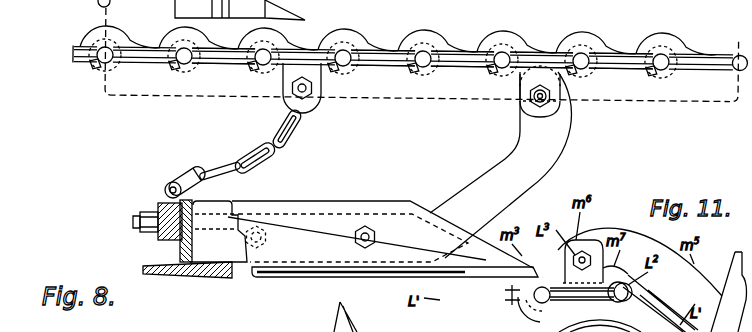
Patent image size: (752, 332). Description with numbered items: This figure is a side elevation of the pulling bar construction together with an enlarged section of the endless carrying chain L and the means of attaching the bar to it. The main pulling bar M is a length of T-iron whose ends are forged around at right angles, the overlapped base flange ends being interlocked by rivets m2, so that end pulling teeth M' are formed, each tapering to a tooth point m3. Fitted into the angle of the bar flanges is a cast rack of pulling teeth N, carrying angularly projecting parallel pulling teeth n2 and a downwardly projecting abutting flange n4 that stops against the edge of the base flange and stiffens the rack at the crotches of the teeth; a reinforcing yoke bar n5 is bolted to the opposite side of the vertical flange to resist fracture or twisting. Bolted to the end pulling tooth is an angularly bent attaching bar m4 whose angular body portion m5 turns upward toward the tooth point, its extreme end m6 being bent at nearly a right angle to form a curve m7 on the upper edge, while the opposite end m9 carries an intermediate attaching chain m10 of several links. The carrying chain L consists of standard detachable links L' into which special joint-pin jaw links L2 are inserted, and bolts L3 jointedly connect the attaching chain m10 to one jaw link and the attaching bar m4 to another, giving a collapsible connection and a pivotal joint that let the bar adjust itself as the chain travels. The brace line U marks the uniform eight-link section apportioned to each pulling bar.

The endless chain L is at (410, 39).
The standard detachable link L' is at (422, 35).
The detachable joint-pin jaw link L2 is at (528, 52).
The bolt L3 is at (293, 92).
The brace line U is at (419, 112).
The rivets m2 is at (212, 280).
The tooth point m3 is at (300, 198).
The angularly bent attaching bar m4 is at (348, 212).
The angular body portion m5 is at (477, 173).
The extreme end m6 is at (516, 88).
The curve m7 is at (518, 138).
The extreme opposite end m9 is at (158, 227).
The intermediate attaching chain m10 is at (248, 150).
The pulling bar M is at (147, 231).
The end pulling tooth M' is at (382, 207).
The rack of pulling teeth N is at (222, 203).
The pulling tooth n2 is at (413, 278).
The abutting flange n4 is at (256, 278).
The reinforcing yoke bar n5 is at (157, 203).